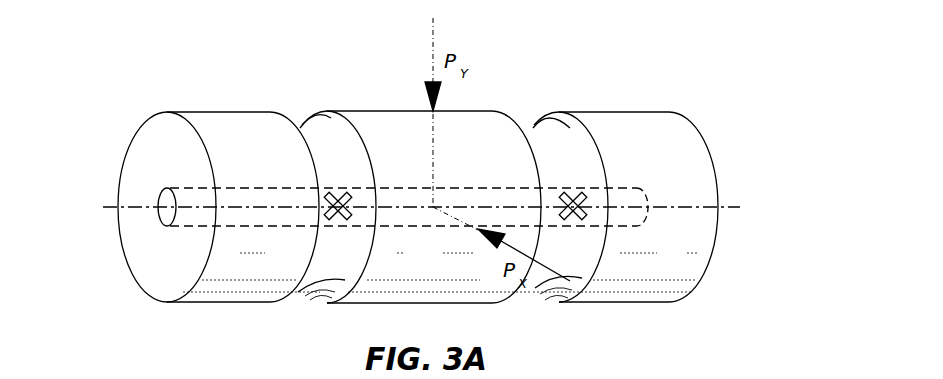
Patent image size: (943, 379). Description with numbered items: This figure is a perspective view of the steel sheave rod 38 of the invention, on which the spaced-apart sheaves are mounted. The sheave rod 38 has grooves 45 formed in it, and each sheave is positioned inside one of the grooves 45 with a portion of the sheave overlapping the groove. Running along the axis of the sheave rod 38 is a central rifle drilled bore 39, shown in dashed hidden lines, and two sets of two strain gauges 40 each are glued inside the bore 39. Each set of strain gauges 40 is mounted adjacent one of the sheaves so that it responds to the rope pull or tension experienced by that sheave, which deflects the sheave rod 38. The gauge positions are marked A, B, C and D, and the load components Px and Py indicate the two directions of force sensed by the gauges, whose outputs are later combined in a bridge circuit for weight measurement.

The sheave rod 38 is at (698, 165).
The central rifle drilled bore 39 is at (167, 192).
The strain gauges 40 is at (323, 284).
The grooves 45 is at (560, 120).